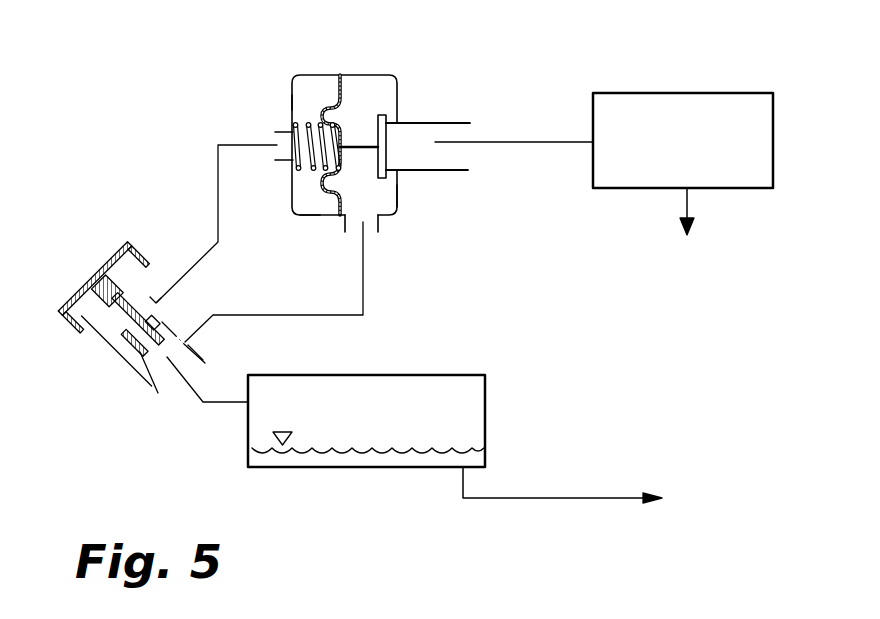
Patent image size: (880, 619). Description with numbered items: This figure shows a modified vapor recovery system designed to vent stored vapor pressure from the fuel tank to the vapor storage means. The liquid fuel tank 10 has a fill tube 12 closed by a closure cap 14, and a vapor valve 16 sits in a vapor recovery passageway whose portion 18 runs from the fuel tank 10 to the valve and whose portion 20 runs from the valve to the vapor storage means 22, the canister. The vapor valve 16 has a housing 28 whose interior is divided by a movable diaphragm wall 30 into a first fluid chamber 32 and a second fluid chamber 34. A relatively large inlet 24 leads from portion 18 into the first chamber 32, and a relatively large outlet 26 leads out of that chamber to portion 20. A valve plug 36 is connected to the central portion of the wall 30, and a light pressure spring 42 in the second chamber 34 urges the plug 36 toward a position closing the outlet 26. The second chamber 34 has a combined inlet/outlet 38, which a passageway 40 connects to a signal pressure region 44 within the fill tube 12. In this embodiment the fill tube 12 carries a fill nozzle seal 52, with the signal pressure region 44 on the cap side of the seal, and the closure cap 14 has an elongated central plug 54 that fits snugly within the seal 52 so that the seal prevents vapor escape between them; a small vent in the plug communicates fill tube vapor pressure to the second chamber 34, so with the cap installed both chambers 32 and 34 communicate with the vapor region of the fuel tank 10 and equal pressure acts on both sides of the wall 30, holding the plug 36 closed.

The liquid fuel tank 10 is at (365, 474).
The fill tube 12 is at (137, 379).
The closure cap 14 is at (67, 324).
The vapor valve 16 is at (299, 77).
The vapor recovery passageway portion 18 is at (365, 306).
The vapor recovery passageway portion 20 is at (552, 143).
The vapor storage means 22 is at (683, 184).
The inlet 24 is at (372, 234).
The outlet 26 is at (447, 134).
The housing 28 is at (293, 215).
The movable wall 30 is at (342, 122).
The first fluid chamber 32 is at (380, 197).
The second fluid chamber 34 is at (293, 100).
The valve plug 36 is at (387, 143).
The combined inlet/outlet 38 is at (277, 137).
The passageway 40 is at (218, 183).
The light pressure spring 42 is at (313, 172).
The signal pressure region 44 is at (154, 316).
The fill nozzle seal 52 is at (158, 395).
The elongated central plug 54 is at (180, 355).